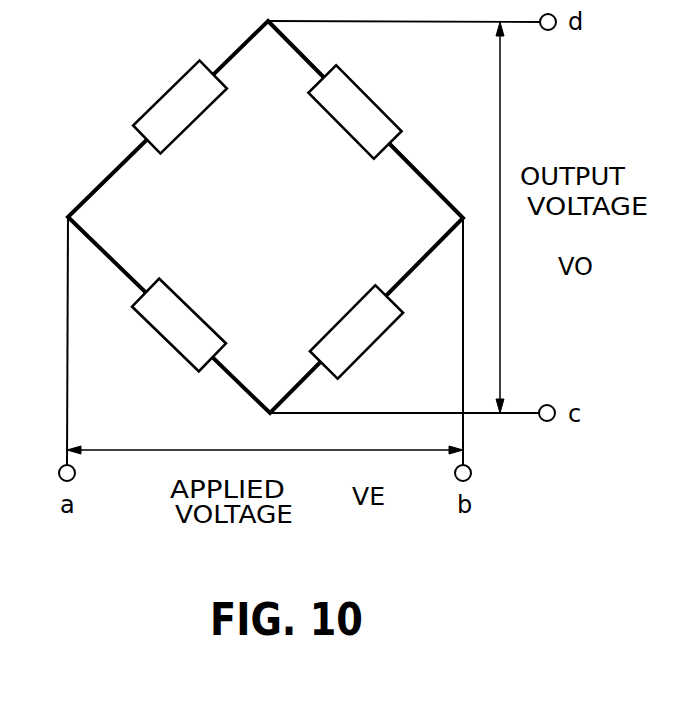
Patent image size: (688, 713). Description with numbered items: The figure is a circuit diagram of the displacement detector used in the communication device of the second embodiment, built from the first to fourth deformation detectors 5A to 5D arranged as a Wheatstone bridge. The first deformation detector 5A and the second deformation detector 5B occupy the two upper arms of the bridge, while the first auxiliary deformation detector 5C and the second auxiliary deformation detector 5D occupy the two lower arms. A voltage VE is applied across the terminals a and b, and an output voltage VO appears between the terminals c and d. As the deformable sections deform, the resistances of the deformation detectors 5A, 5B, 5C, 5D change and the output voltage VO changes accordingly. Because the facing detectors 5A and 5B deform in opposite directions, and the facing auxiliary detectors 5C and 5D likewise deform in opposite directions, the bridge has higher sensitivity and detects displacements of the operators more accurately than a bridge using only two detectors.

The first deformation detector 5A is at (170, 107).
The second deformation detector 5B is at (365, 112).
The first auxiliary deformation detector 5C is at (172, 326).
The second auxiliary deformation detector 5D is at (364, 332).